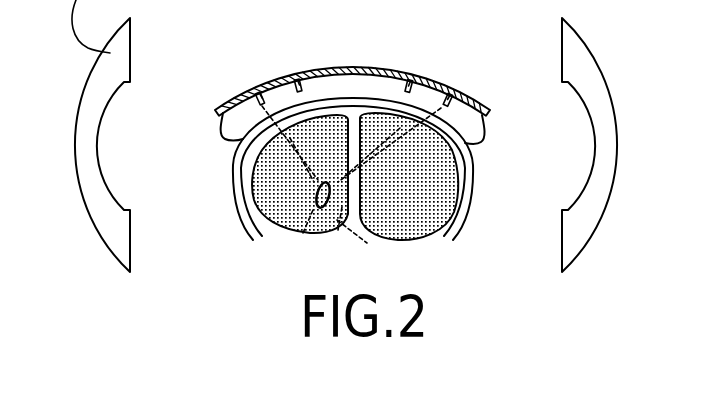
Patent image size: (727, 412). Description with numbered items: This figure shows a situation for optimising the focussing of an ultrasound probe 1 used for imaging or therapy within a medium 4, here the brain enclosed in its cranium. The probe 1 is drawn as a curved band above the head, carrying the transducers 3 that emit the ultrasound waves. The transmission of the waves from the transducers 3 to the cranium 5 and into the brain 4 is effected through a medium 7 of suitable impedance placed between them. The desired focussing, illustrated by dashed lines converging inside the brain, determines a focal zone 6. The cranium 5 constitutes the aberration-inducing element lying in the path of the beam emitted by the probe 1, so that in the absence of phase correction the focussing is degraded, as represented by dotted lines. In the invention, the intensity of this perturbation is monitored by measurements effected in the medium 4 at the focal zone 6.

The ultrasound probe 1 is at (430, 81).
The transducers 3 is at (297, 78).
The medium 4 is at (284, 174).
The cranium 5 is at (237, 200).
The focal zone 6 is at (318, 199).
The medium of suitable impedance 7 is at (470, 130).